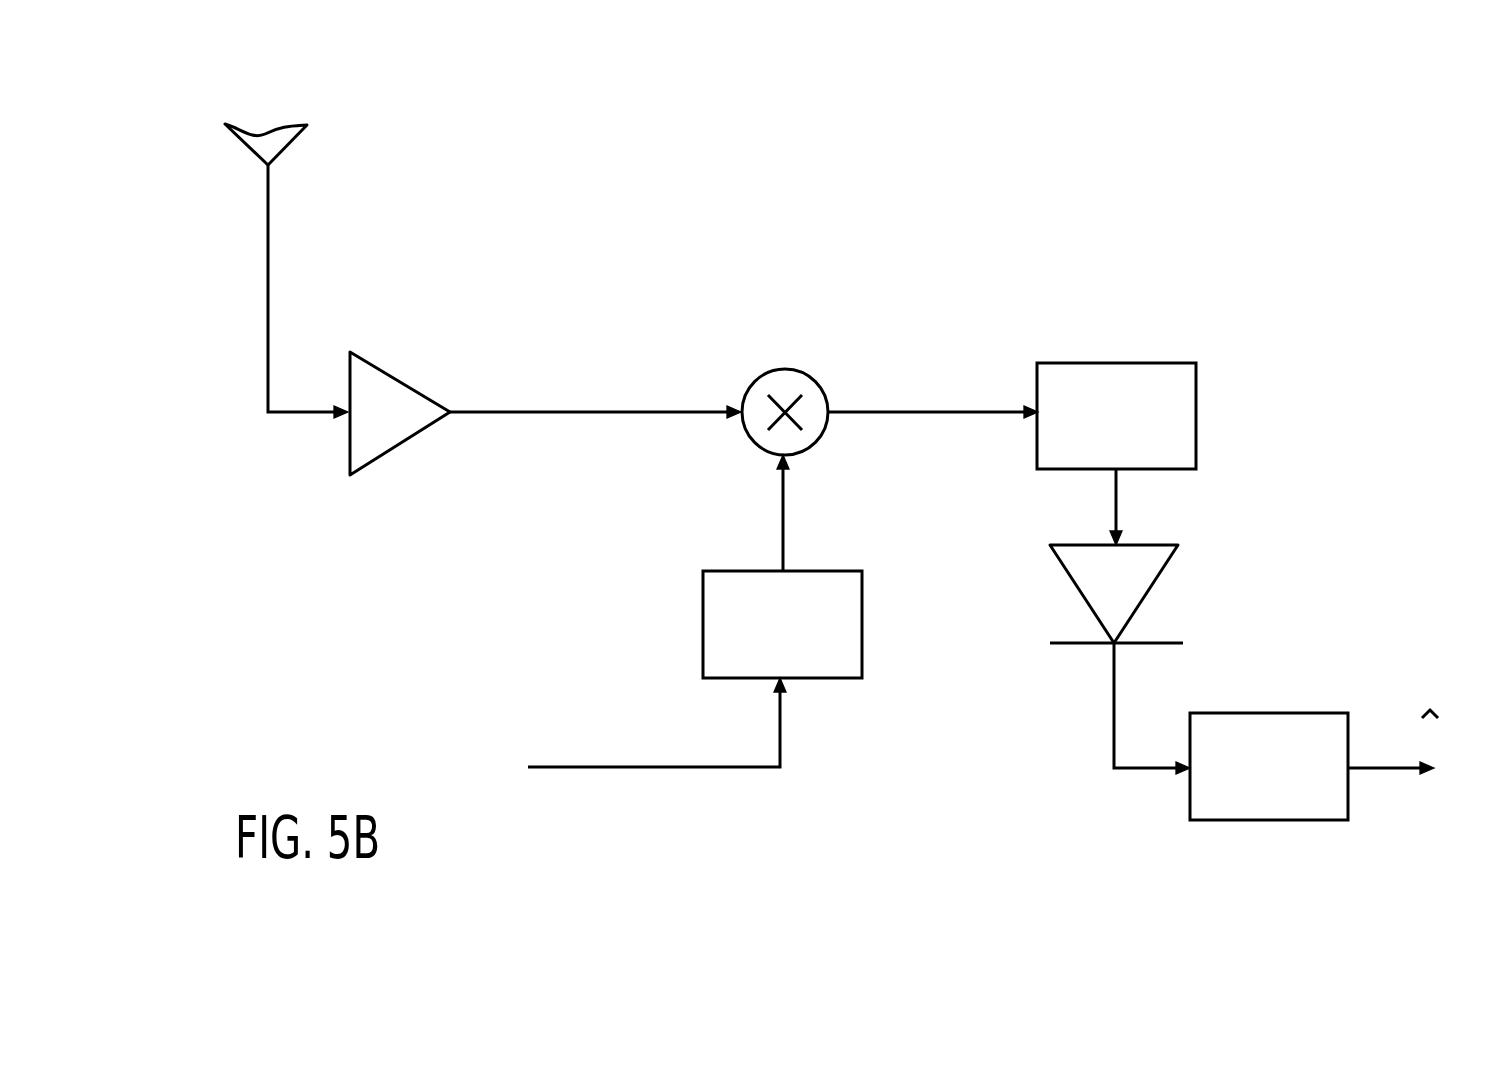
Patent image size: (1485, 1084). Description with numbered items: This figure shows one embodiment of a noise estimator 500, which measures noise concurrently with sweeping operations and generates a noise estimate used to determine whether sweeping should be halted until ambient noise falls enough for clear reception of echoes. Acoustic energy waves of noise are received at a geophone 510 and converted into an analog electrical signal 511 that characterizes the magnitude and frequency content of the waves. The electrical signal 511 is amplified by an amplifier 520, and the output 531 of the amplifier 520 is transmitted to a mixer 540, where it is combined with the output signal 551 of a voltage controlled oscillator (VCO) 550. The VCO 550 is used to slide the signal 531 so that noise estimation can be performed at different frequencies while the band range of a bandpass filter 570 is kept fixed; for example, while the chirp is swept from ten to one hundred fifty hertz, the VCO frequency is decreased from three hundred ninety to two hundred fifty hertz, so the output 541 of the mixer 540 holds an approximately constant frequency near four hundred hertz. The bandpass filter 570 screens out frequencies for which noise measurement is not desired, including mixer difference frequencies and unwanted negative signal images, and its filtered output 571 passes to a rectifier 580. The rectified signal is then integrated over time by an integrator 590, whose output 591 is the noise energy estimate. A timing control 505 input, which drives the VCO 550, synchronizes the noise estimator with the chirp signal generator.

The noise estimator 500 is at (1072, 143).
The timing control 505 is at (605, 768).
The geophone 510 is at (285, 150).
The analog electrical signal 511 is at (268, 302).
The amplifier 520 is at (397, 377).
The output of amplifier 531 is at (680, 410).
The mixer 540 is at (808, 370).
The output of mixer 541 is at (878, 410).
The voltage controlled oscillator (VCO) 550 is at (782, 624).
The VCO output signal 551 is at (783, 527).
The bandpass filter 570 is at (1116, 416).
The bandpass filter output 571 is at (1116, 518).
The rectifier 580 is at (1140, 607).
The integrator 590 is at (1269, 766).
The noise estimate output 591 is at (1392, 767).